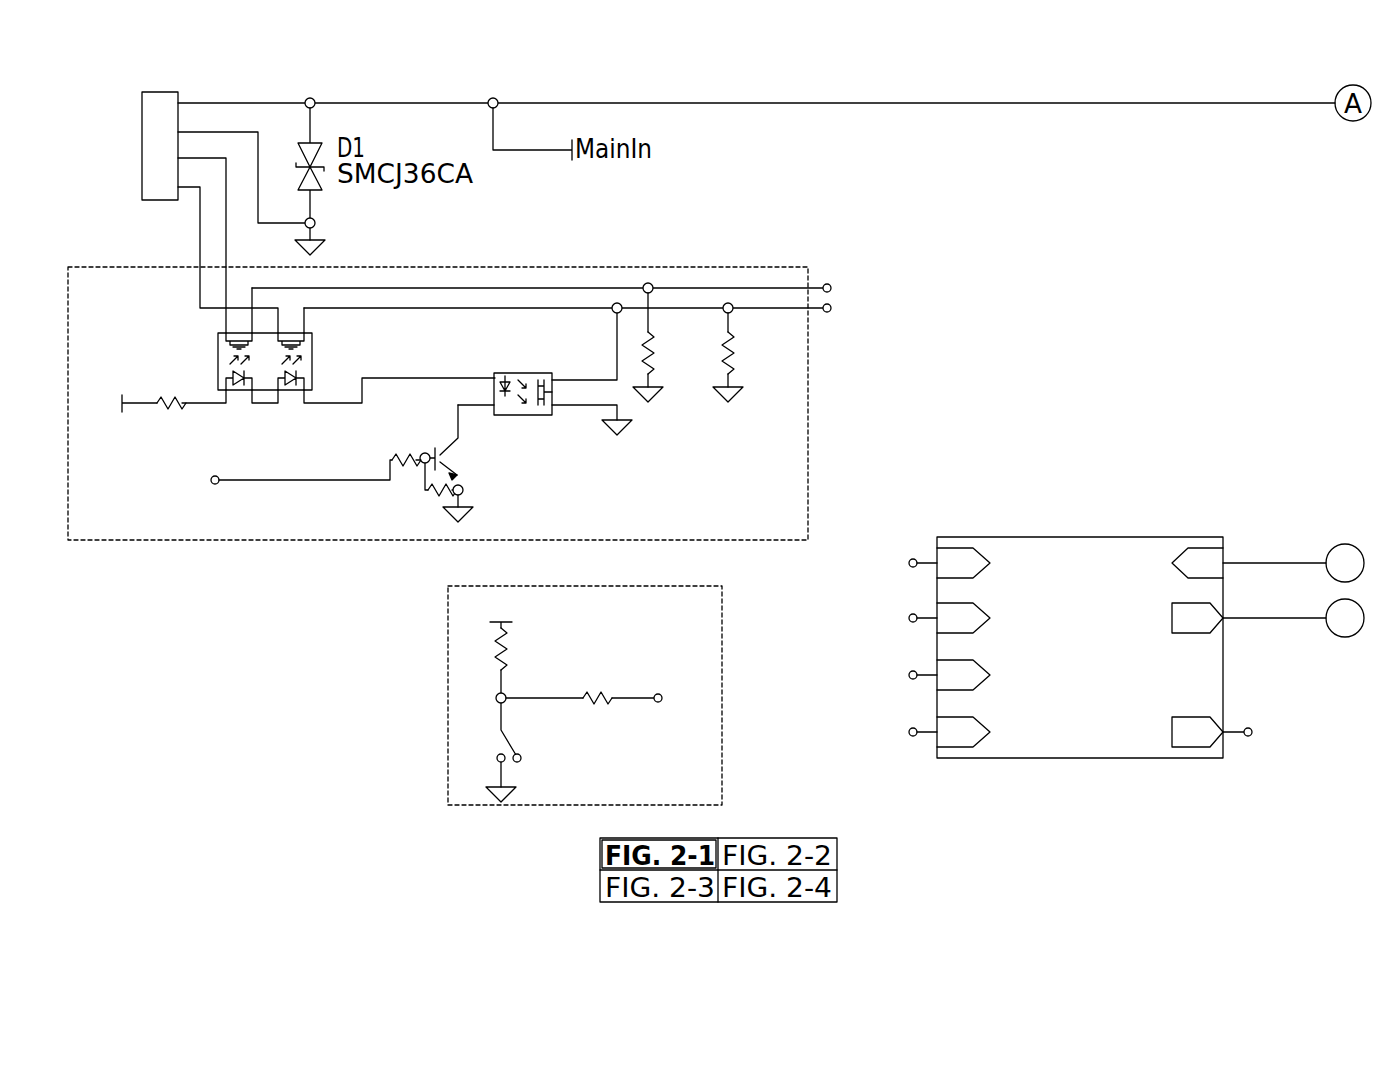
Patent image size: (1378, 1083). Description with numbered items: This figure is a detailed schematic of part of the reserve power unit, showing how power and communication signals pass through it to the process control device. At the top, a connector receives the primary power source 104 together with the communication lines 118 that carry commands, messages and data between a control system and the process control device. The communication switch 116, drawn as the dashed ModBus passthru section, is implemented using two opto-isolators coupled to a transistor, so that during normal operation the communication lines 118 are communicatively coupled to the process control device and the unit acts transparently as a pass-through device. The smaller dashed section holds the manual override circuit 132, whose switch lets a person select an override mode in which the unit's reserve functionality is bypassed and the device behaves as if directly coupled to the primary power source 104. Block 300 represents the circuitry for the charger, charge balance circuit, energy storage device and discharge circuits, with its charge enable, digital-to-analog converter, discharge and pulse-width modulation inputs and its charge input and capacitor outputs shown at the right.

The primary power source 104 is at (178, 117).
The communication lines 118 is at (167, 175).
The communication switch 116 is at (718, 268).
The manual override circuit 132 is at (722, 652).
The block 300 is at (925, 526).